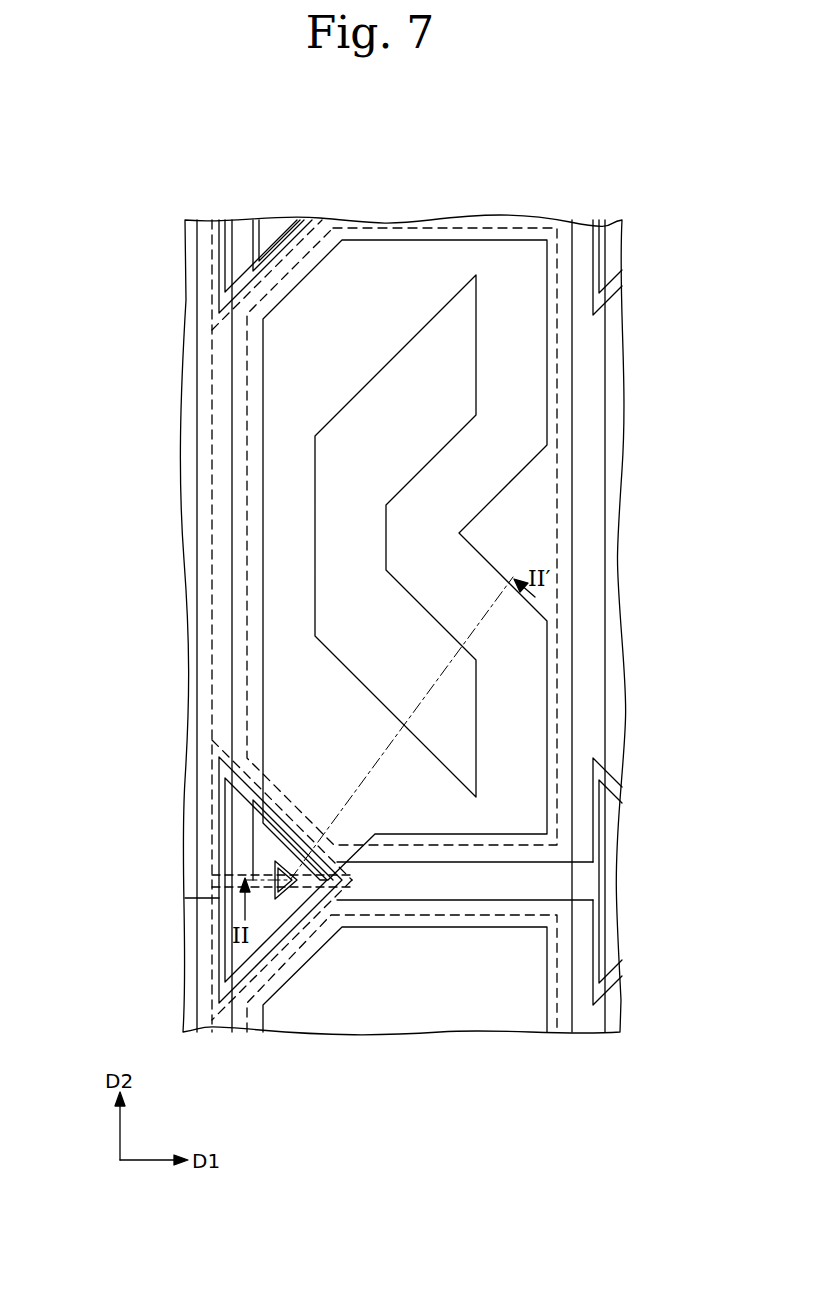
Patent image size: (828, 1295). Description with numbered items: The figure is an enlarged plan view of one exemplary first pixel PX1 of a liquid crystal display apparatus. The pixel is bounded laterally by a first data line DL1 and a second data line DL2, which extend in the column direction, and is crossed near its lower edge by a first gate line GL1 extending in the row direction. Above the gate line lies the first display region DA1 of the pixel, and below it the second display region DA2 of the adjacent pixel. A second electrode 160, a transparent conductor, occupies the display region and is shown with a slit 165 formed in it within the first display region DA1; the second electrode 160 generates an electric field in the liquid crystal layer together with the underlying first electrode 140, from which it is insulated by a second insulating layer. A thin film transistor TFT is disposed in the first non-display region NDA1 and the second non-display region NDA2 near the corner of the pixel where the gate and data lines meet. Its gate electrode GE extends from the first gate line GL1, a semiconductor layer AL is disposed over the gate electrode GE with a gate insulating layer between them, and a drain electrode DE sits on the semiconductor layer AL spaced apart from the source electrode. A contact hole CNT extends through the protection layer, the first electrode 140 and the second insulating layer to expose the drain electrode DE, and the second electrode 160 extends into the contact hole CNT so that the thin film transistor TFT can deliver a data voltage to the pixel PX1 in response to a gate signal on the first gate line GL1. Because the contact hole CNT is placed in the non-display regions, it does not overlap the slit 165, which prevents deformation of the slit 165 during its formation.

The first pixel PX1 is at (557, 262).
The first data line DL1 is at (211, 240).
The second data line DL2 is at (587, 240).
The first electrode 140 is at (535, 536).
The first display region DA1 is at (247, 409).
The second electrode 160 is at (278, 361).
The slit 165 is at (330, 474).
The second display region DA2 is at (247, 1015).
The first gate line GL1 is at (212, 888).
The first non-display region NDA1 is at (212, 742).
The second non-display region NDA2 is at (212, 940).
The thin film transistor TFT is at (96, 758).
The gate electrode GE is at (222, 778).
The semiconductor layer AL is at (230, 808).
The drain electrode DE is at (255, 848).
The contact hole CNT is at (276, 872).